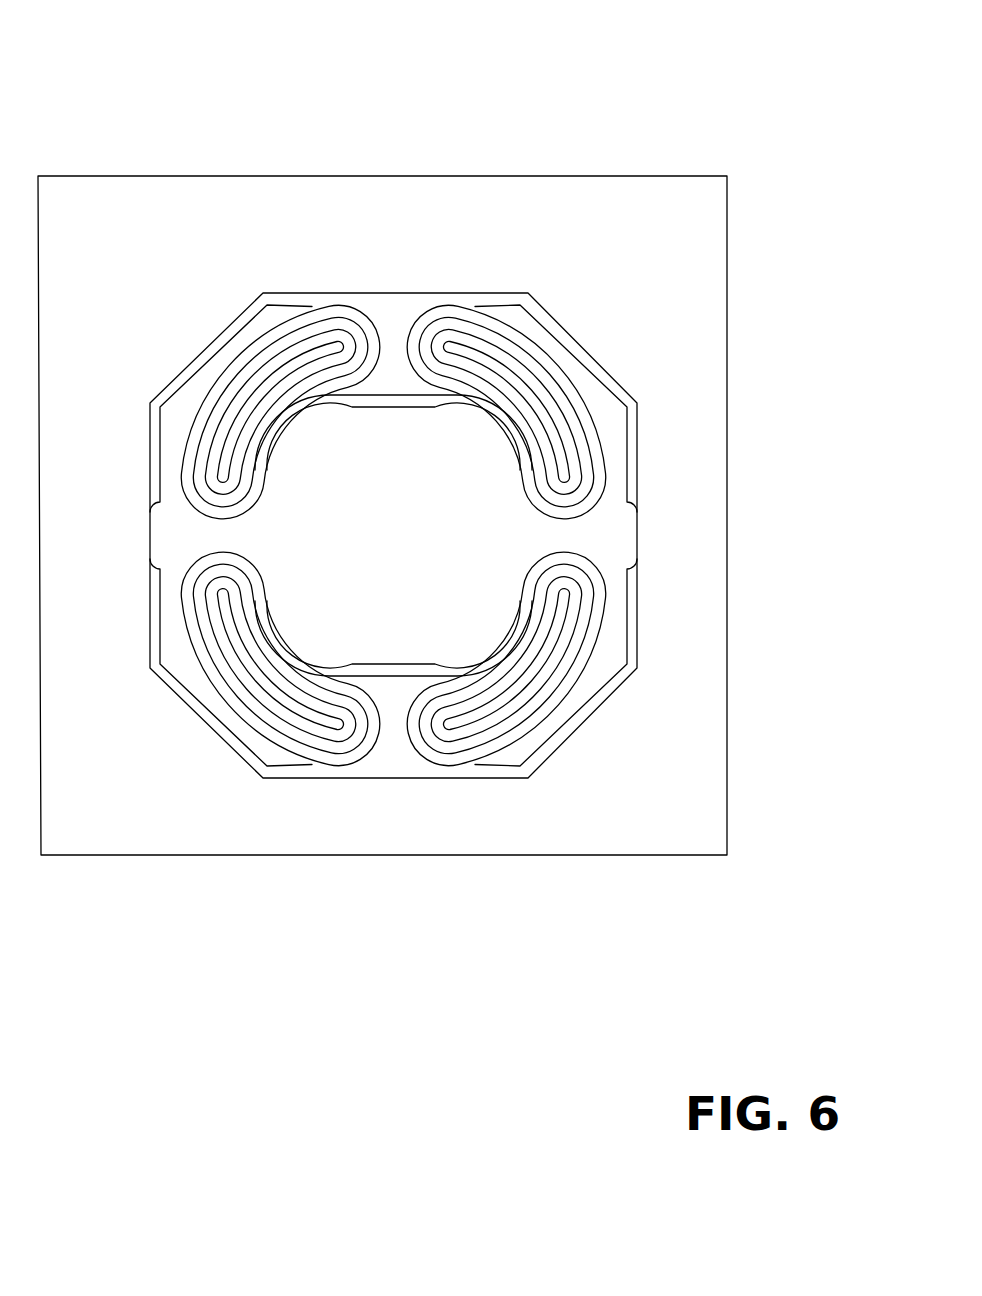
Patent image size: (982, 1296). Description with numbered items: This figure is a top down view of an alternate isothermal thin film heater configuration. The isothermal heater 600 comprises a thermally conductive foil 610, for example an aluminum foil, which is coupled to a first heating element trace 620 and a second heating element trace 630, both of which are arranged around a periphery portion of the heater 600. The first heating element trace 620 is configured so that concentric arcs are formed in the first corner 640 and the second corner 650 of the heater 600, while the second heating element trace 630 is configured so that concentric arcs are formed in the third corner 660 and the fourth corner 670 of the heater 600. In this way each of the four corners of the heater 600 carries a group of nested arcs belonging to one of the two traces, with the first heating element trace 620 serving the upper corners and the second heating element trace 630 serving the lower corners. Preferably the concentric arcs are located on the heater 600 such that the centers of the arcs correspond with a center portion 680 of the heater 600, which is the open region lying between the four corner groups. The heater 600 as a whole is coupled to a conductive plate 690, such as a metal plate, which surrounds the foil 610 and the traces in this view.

The isothermal heater 600 is at (244, 60).
The thermally conductive foil 610 is at (400, 297).
The first heating element trace 620 is at (352, 407).
The second heating element trace 630 is at (433, 664).
The first corner 640 is at (598, 322).
The second corner 650 is at (208, 322).
The third corner 660 is at (608, 738).
The fourth corner 670 is at (184, 740).
The center portion 680 is at (428, 554).
The conductive plate 690 is at (730, 478).